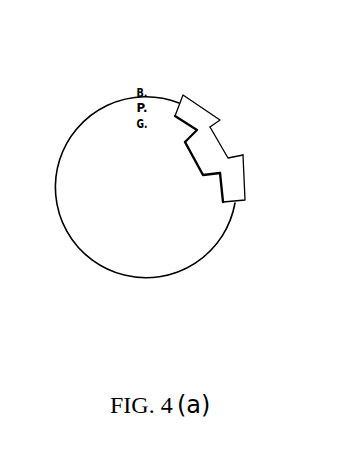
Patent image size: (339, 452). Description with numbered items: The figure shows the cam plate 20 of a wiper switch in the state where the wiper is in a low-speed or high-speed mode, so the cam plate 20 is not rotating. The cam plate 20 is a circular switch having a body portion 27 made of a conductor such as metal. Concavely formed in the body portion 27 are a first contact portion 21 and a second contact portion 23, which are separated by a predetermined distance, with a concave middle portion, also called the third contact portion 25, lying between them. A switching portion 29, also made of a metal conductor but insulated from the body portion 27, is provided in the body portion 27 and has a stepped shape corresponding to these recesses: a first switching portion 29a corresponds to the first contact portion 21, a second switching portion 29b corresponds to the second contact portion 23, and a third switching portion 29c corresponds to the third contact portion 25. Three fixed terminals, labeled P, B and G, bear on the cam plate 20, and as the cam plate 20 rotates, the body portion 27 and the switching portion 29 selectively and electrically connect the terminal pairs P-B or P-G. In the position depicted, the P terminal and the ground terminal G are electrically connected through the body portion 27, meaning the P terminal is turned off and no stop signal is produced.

The cam plate 20 is at (141, 220).
The first contact portion 21 is at (189, 120).
The second contact portion 23 is at (193, 160).
The third contact portion 25 is at (221, 187).
The body portion 27 is at (187, 268).
The switching portion 29 is at (242, 108).
The first switching portion 29a is at (201, 110).
The second switching portion 29b is at (216, 144).
The third switching portion 29c is at (241, 177).